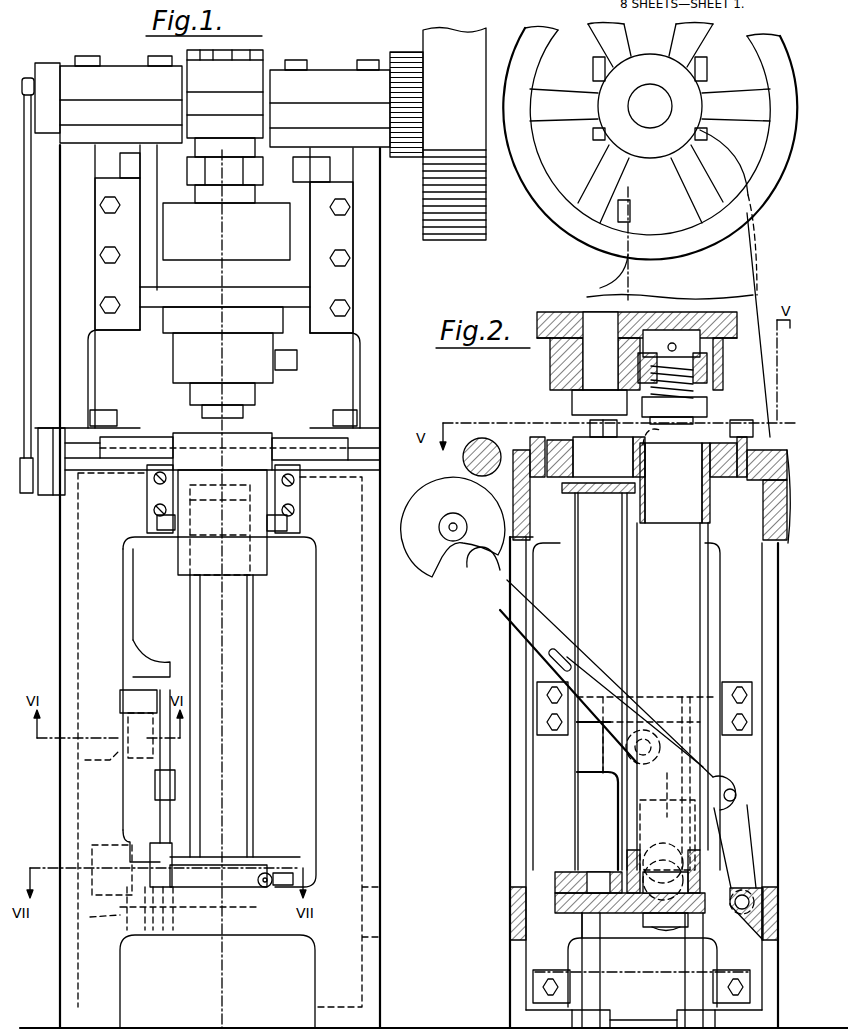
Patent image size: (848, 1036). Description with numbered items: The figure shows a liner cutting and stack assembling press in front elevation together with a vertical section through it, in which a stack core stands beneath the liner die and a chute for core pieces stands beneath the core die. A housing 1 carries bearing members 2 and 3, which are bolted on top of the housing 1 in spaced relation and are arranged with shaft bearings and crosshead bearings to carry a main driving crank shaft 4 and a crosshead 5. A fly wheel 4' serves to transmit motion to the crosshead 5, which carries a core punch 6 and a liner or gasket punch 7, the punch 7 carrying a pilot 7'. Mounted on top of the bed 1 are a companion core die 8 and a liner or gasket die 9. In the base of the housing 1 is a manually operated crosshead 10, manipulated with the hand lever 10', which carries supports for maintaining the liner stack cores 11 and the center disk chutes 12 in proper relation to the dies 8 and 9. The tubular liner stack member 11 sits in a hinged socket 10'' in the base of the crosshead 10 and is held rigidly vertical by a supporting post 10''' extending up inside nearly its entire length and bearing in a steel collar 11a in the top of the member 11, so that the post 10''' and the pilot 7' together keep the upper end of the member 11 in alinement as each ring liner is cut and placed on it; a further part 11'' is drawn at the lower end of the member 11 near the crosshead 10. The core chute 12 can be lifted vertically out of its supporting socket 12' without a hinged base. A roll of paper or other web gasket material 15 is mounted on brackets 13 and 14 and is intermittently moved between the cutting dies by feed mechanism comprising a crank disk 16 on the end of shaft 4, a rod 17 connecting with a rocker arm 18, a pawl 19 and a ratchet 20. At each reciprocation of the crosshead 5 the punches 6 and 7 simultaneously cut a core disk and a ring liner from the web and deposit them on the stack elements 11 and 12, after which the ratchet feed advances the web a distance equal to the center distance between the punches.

In FIG. 1, the housing 1 is at (355, 662).
In FIG. 2, the housing 1 is at (644, 782).
In FIG. 1, the bearing member 2 is at (380, 355).
In FIG. 2, the bearing member 2 is at (678, 283).
In FIG. 1, the bearing member 3 is at (224, 303).
In FIG. 2, the bearing member 3 is at (641, 351).
In FIG. 2, the main driving crank shaft 4 is at (633, 107).
In FIG. 1, the fly wheel 4' is at (438, 155).
In FIG. 2, the fly wheel 4' is at (650, 141).
In FIG. 1, the crosshead 5 is at (225, 268).
In FIG. 2, the crosshead 5 is at (600, 288).
In FIG. 1, the core punch 6 is at (195, 395).
In FIG. 2, the core punch 6 is at (572, 405).
In FIG. 1, the liner or gasket punch 7 is at (234, 396).
In FIG. 2, the liner or gasket punch 7 is at (693, 373).
In FIG. 1, the pilot 7' is at (250, 415).
In FIG. 2, the pilot 7' is at (687, 418).
In FIG. 2, the core die 8 is at (573, 495).
In FIG. 2, the liner or gasket die 9 is at (563, 520).
In FIG. 2, the manually operated crosshead 10 is at (620, 866).
In FIG. 1, the hand lever 10' is at (149, 712).
In FIG. 2, the hand lever 10' is at (601, 678).
In FIG. 1, the hinged socket 10'' is at (235, 854).
In FIG. 2, the supporting post 10''' is at (662, 732).
In FIG. 1, the liner stack member 11 is at (237, 716).
In FIG. 2, the liner stack member 11 is at (693, 696).
In FIG. 2, the steel collar 11a is at (650, 450).
In FIG. 2, the rod nut 11'' is at (617, 871).
In FIG. 1, the center disk chute 12 is at (265, 716).
In FIG. 2, the center disk chute 12 is at (601, 681).
In FIG. 2, the supporting socket 12' is at (557, 926).
In FIG. 1, the bracket 13 is at (150, 495).
In FIG. 1, the bracket 14 is at (300, 497).
In FIG. 1, the web gasket material 15 is at (258, 558).
In FIG. 2, the web gasket material 15 is at (455, 488).
In FIG. 1, the crank disk 16 is at (48, 128).
In FIG. 1, the rod 17 is at (31, 290).
In FIG. 1, the rocker arm 18 is at (35, 430).
In FIG. 1, the pawl 19 is at (60, 430).
In FIG. 1, the ratchet 20 is at (52, 495).